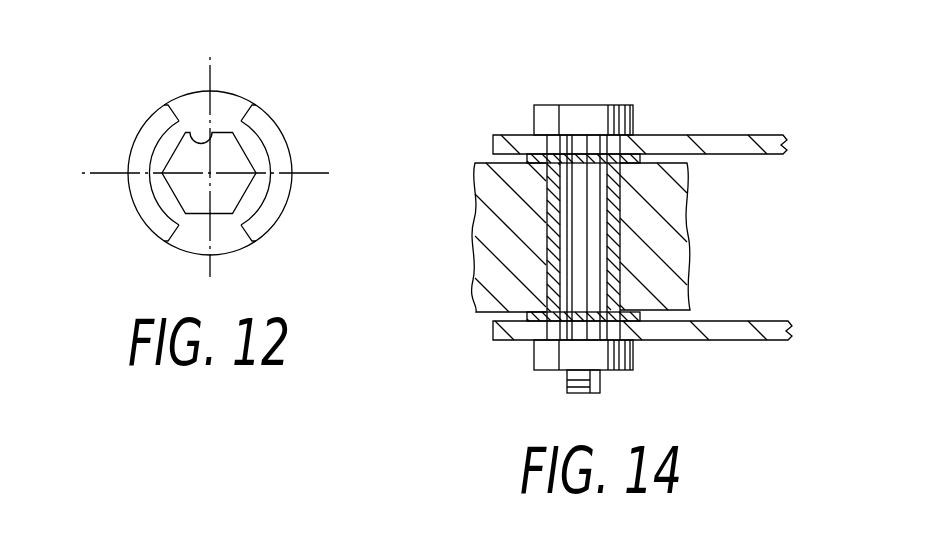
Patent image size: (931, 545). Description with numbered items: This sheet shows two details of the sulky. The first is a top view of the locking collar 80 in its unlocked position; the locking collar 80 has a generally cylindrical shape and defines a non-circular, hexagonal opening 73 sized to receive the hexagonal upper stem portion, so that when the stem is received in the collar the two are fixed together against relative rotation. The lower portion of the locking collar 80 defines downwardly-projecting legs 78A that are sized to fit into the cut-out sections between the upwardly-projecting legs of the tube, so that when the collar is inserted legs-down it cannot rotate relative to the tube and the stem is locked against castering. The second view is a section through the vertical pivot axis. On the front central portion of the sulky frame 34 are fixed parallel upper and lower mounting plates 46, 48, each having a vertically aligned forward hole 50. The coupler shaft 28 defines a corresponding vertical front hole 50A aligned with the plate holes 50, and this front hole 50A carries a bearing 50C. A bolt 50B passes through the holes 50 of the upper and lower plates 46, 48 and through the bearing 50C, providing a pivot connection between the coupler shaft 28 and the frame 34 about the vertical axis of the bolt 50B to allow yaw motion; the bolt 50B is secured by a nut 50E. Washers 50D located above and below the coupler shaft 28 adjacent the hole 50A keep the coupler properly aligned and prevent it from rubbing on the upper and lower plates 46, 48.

In FIG. 12, the non-circular opening 73 is at (212, 138).
In FIG. 12, the locking collar 80 is at (282, 130).
In FIG. 12, the downwardly-projecting legs 78A is at (148, 212).
In FIG. 14, the sulky frame 34 is at (781, 118).
In FIG. 14, the upper mounting plate 46 is at (732, 135).
In FIG. 14, the lower mounting plate 48 is at (765, 333).
In FIG. 14, the coupler shaft 28 is at (665, 205).
In FIG. 14, the forward holes 50 is at (606, 145).
In FIG. 14, the front hole of the coupler 50A is at (548, 215).
In FIG. 14, the bolt 50B is at (581, 106).
In FIG. 14, the bearing 50C is at (612, 260).
In FIG. 14, the washers 50D is at (527, 160).
In FIG. 14, the nut 50E is at (547, 362).